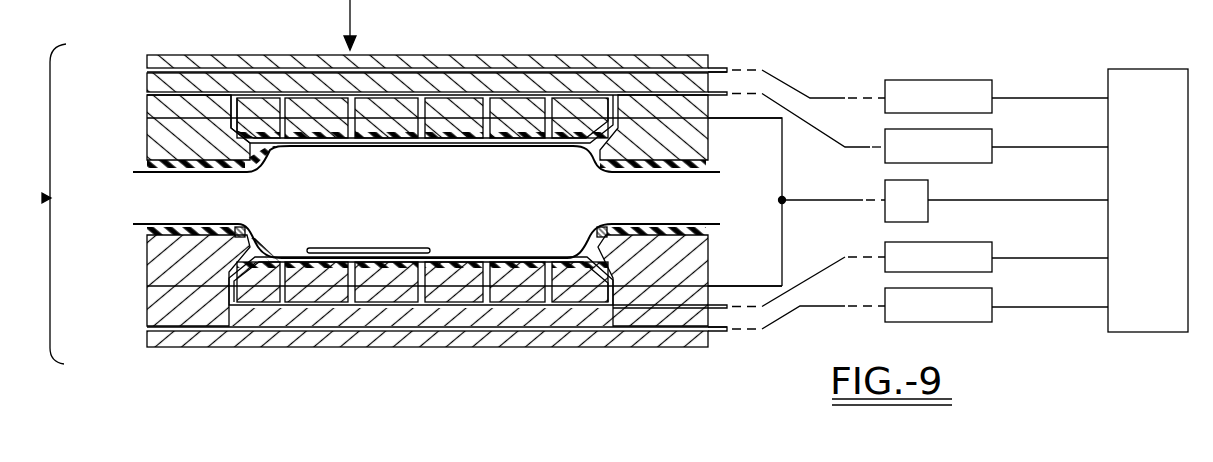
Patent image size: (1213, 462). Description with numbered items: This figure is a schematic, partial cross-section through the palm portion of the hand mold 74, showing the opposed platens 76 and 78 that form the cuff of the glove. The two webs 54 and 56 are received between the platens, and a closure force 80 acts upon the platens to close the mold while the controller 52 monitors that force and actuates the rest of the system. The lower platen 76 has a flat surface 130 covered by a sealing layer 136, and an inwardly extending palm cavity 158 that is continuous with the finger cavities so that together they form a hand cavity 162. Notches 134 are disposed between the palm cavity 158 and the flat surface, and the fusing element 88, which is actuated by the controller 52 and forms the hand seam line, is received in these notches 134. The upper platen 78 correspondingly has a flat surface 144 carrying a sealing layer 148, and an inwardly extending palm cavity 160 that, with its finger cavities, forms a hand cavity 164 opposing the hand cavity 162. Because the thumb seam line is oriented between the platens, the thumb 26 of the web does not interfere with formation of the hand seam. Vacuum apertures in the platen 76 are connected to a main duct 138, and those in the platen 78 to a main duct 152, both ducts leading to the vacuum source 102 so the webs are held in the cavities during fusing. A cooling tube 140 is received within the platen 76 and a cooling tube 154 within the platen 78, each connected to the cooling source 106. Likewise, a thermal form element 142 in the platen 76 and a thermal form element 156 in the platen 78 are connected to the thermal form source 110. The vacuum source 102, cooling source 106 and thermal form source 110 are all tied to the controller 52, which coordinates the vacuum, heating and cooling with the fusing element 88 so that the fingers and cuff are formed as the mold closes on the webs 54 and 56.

The thumb 26 is at (390, 249).
The controller 52 is at (1161, 69).
The web 54 is at (133, 224).
The web 56 is at (133, 172).
The hand mold 74 is at (35, 204).
The platen 76 is at (148, 287).
The platen 78 is at (148, 108).
The closure force 80 is at (350, 12).
The fusing element 88 is at (240, 224).
The vacuum source 102 is at (995, 135).
The cooling source 106 is at (995, 82).
The thermal form source 110 is at (928, 190).
The flat surface 130 is at (147, 238).
The notches 134 is at (700, 262).
The sealing layer 136 is at (712, 238).
The main duct 138 is at (522, 310).
The cooling tube 140 is at (437, 333).
The thermal form element 142 is at (784, 240).
The flat surface 144 is at (148, 143).
The sealing layer 148 is at (712, 170).
The main duct 152 is at (383, 90).
The cooling tube 154 is at (485, 66).
The thermal form element 156 is at (784, 176).
The palm cavity 158 is at (296, 264).
The palm cavity 160 is at (445, 137).
The hand cavity 162 is at (442, 240).
The hand cavity 164 is at (386, 158).